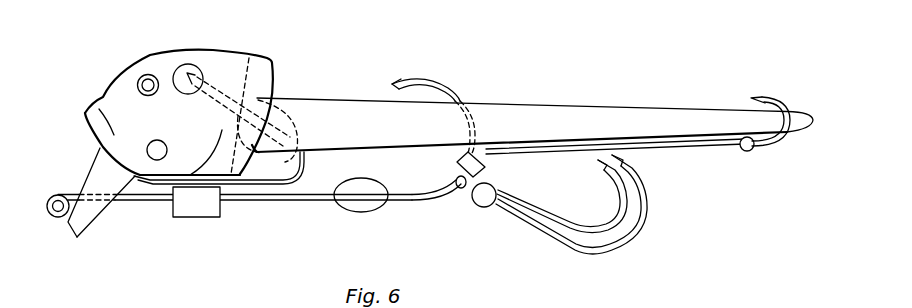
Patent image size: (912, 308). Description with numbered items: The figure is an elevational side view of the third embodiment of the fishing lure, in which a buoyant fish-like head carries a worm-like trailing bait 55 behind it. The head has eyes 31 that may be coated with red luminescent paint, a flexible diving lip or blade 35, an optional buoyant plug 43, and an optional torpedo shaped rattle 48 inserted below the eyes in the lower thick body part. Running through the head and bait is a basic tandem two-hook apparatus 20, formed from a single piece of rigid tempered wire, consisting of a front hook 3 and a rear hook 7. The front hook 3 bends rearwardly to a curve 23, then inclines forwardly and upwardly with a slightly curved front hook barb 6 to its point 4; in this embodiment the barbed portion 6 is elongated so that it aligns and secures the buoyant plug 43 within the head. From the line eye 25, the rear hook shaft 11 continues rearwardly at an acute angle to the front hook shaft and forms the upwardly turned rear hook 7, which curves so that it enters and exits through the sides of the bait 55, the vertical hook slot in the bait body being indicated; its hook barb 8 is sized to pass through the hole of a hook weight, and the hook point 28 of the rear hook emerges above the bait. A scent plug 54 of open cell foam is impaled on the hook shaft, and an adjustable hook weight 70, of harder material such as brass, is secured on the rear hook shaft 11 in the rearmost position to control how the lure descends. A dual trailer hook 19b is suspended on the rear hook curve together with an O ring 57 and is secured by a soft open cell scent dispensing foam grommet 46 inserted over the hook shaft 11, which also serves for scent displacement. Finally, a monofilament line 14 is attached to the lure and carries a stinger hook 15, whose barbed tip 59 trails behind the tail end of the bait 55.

The eyes 31 is at (152, 62).
The buoyant plug 43 is at (185, 66).
The point 4 is at (189, 75).
The front hook barb 6 is at (257, 72).
The front hook 3 is at (277, 116).
The torpedo rattle 48 is at (156, 160).
The bait 55 is at (690, 112).
The curve 23 is at (303, 148).
The flexible blade 35 is at (78, 241).
The line eye 25 is at (47, 195).
The rear hook shaft 11 is at (242, 201).
The tandem two-hook apparatus 20 is at (313, 202).
The scent plug 54 is at (197, 218).
The adjustable hook weight 70 is at (368, 211).
The hook barb 8 is at (428, 82).
The hook point 28 is at (398, 79).
The rear hook 7 is at (474, 101).
The open cell foam grommet 46 is at (489, 173).
The line 14 is at (687, 148).
The stinger hook 15 is at (748, 153).
The tail hook 59 is at (797, 110).
The O ring 57 is at (482, 192).
The dual trailer hook 19b is at (542, 238).